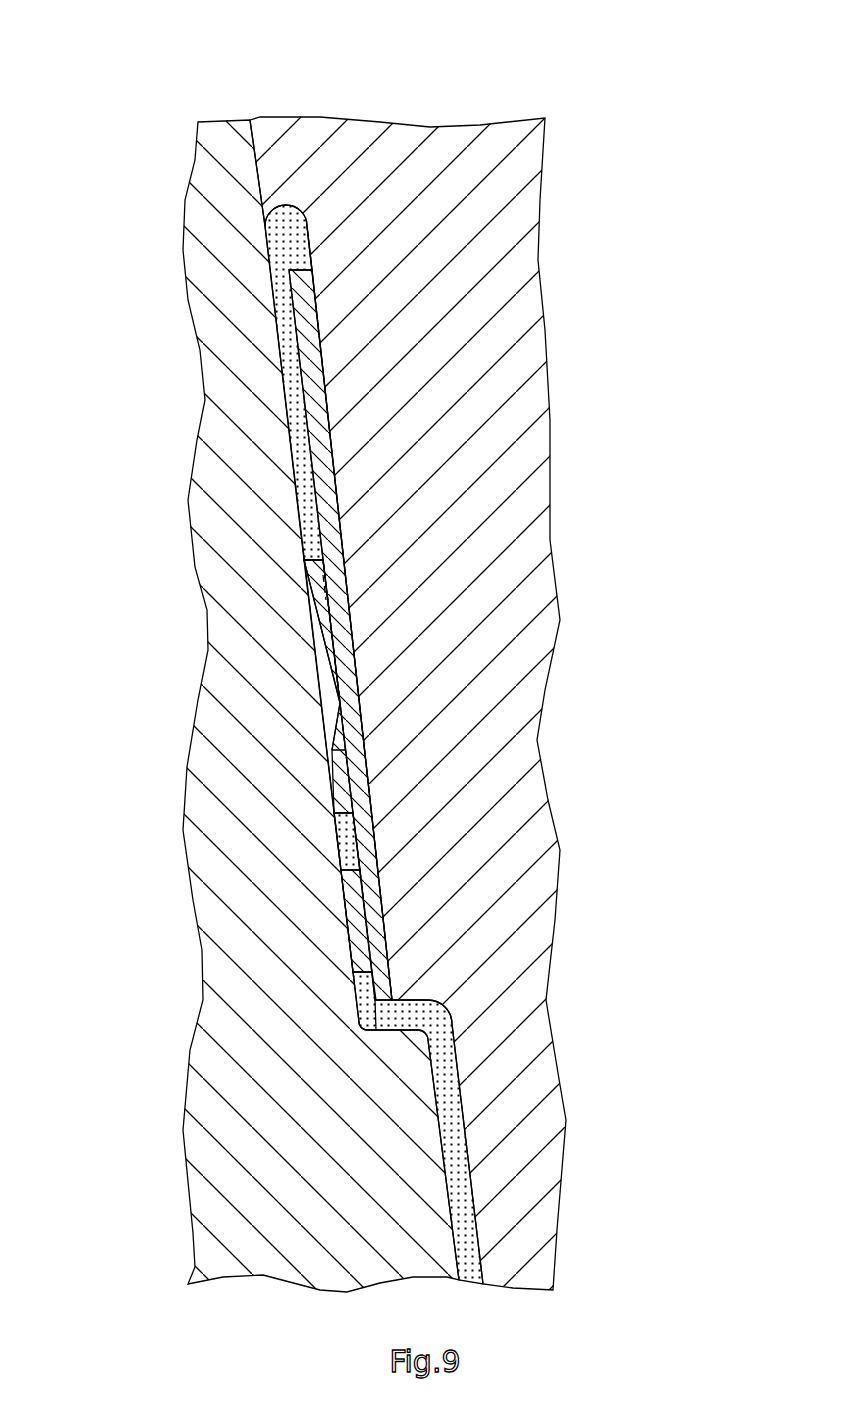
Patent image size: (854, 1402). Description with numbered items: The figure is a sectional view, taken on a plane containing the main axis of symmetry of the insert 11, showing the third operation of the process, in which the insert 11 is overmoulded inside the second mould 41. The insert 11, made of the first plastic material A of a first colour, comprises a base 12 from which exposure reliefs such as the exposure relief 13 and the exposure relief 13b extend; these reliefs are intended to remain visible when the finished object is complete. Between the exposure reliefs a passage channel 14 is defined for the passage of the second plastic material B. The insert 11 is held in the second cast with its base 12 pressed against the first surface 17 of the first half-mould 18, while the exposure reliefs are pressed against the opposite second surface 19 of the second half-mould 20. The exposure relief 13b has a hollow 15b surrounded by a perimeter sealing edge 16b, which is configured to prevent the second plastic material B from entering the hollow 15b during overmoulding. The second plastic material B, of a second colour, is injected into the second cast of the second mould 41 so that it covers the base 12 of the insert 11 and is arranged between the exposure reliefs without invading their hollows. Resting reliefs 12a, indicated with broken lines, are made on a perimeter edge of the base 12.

The second mould 41 is at (422, 83).
The insert 11 is at (320, 321).
The base 12 is at (332, 455).
The resting reliefs 12a is at (358, 1022).
The exposure relief 13 is at (346, 977).
The exposure relief 13b is at (325, 755).
The passage channel 14 is at (325, 587).
The hollow 15b is at (335, 703).
The perimeter sealing edge 16b is at (312, 572).
The first surface 17 is at (343, 528).
The first half-mould 18 is at (472, 645).
The second surface 19 is at (287, 401).
The second half-mould 20 is at (248, 657).
The first plastic material A is at (355, 767).
The second plastic material B is at (280, 233).